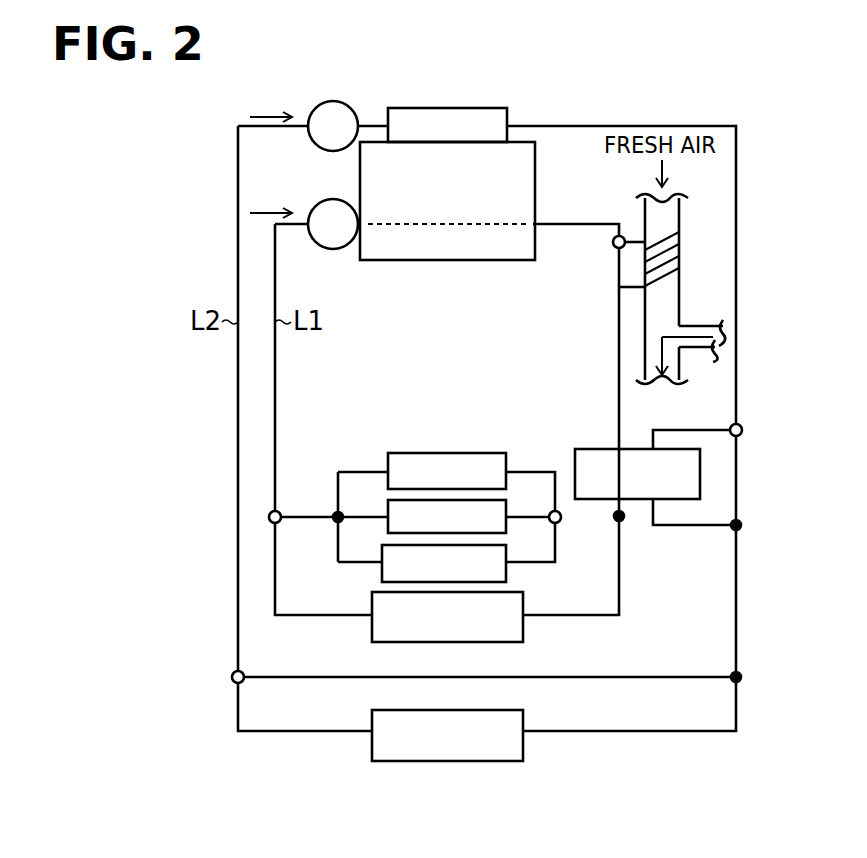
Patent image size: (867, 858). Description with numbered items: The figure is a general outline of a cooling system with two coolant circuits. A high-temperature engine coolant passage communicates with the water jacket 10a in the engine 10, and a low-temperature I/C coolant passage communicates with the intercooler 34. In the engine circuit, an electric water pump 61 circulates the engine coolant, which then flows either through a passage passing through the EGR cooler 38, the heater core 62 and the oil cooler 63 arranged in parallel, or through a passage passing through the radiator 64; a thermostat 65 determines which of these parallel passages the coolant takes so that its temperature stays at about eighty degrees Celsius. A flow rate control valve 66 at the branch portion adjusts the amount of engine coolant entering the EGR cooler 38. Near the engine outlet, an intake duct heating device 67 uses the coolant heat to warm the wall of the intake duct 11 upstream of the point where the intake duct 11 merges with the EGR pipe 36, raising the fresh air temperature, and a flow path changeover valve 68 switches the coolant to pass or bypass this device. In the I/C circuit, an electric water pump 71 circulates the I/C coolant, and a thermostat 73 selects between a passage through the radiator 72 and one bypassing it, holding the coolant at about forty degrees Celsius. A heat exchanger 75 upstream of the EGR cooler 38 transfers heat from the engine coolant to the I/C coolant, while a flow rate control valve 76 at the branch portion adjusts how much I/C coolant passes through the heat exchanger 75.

The engine 10 is at (536, 150).
The water jacket 10a is at (487, 230).
The intake duct 11 is at (680, 222).
The intercooler 34 is at (493, 108).
The EGR pipe 36 is at (702, 326).
The EGR cooler 38 is at (507, 552).
The electric water pump 61 is at (322, 199).
The heater core 62 is at (507, 462).
The oil cooler 63 is at (507, 508).
The radiator 64 is at (524, 602).
The thermostat 65 is at (281, 512).
The flow rate control valve 66 is at (560, 522).
The intake duct heating device 67 is at (668, 268).
The flow path changeover valve 68 is at (612, 243).
The electric water pump 71 is at (322, 101).
The radiator 72 is at (525, 720).
The thermostat 73 is at (244, 672).
The heat exchanger 75 is at (589, 449).
The flow rate control valve 76 is at (739, 425).